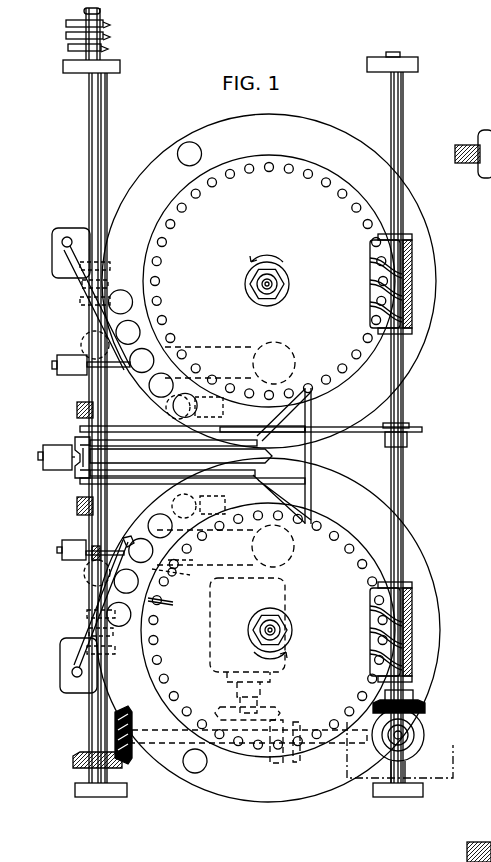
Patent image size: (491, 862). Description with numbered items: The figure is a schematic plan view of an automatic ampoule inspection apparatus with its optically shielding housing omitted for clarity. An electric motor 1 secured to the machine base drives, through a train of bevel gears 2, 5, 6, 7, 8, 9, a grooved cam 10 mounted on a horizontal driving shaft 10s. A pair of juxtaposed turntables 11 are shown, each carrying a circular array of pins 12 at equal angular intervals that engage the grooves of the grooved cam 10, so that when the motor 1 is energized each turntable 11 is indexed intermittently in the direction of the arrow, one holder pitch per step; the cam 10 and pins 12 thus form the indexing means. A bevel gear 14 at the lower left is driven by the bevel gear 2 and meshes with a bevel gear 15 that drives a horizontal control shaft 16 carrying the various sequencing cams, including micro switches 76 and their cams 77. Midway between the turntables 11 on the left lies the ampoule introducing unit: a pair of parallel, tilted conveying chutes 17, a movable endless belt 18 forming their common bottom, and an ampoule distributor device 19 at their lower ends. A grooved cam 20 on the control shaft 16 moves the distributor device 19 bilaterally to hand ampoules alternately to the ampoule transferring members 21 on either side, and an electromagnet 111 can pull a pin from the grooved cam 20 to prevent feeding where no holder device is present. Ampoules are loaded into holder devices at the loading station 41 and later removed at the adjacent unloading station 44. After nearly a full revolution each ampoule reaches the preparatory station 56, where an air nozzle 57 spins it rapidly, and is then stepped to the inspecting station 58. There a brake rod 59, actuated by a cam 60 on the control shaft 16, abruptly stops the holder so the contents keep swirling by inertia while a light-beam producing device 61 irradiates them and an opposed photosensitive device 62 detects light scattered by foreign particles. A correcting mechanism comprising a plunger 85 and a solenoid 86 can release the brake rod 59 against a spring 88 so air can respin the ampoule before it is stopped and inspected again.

The electric motor 1 is at (285, 662).
The bevel gear 2 is at (270, 708).
The bevel gear 5 is at (285, 728).
The bevel gear 6 is at (375, 762).
The bevel gear 7 is at (418, 752).
The bevel gear 8 is at (427, 728).
The bevel gear 9 is at (425, 708).
The grooved cam 10 is at (413, 258).
The driving shaft 10s is at (404, 498).
The turntable 11 is at (350, 144).
The pins 12 is at (322, 184).
The bevel gear 14 is at (131, 748).
The bevel gear 15 is at (72, 761).
The control shaft 16 is at (89, 731).
The ampoule conveying chutes 17 is at (150, 452).
The endless belt 18 is at (256, 476).
The ampoule distributor device 19 is at (78, 438).
The grooved cam 20 is at (88, 467).
The ampoule transferring member 21 is at (77, 508).
The loading station 41 is at (215, 502).
The unloading station 44 is at (170, 515).
The preparatory station 56 is at (145, 583).
The air nozzle 57 is at (175, 608).
The inspecting station 58 is at (126, 543).
The brake rod 59 is at (62, 661).
The cam 60 is at (80, 304).
The light-beam producing device 61 is at (293, 359).
The photosensitive device 62 is at (84, 341).
The micro switches 76 is at (66, 47).
The cams 77 is at (103, 47).
The plunger 85 is at (88, 538).
The solenoid 86 is at (62, 553).
The spring 88 is at (204, 773).
The electromagnet 111 is at (43, 459).